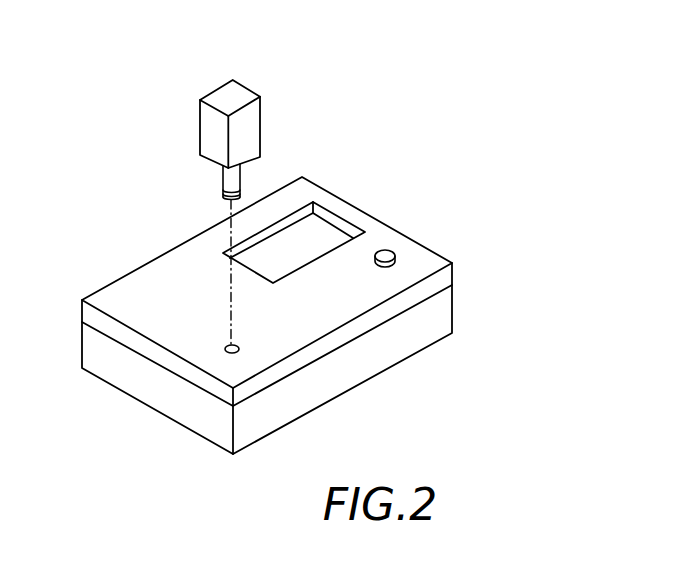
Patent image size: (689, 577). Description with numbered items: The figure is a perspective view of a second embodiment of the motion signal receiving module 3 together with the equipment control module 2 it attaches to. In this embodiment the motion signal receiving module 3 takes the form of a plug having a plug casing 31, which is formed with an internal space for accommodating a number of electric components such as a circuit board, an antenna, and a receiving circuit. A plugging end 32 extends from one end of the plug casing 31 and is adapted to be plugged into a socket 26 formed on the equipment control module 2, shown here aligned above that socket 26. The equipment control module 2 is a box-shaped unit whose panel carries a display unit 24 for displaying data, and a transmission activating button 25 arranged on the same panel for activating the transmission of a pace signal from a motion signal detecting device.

The equipment control module 2 is at (412, 332).
The motion signal receiving module 3 is at (202, 117).
The display unit 24 is at (322, 243).
The transmission activating button 25 is at (388, 252).
The socket 26 is at (225, 347).
The plug casing 31 is at (248, 112).
The plugging end 32 is at (227, 180).